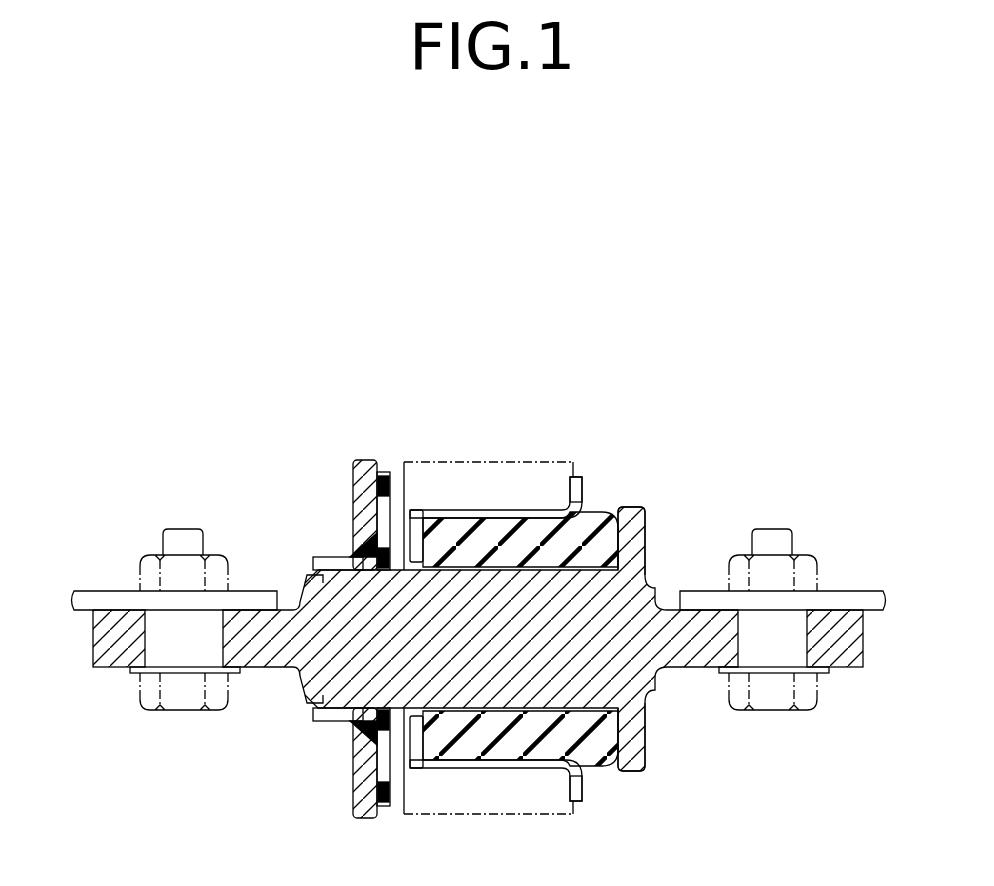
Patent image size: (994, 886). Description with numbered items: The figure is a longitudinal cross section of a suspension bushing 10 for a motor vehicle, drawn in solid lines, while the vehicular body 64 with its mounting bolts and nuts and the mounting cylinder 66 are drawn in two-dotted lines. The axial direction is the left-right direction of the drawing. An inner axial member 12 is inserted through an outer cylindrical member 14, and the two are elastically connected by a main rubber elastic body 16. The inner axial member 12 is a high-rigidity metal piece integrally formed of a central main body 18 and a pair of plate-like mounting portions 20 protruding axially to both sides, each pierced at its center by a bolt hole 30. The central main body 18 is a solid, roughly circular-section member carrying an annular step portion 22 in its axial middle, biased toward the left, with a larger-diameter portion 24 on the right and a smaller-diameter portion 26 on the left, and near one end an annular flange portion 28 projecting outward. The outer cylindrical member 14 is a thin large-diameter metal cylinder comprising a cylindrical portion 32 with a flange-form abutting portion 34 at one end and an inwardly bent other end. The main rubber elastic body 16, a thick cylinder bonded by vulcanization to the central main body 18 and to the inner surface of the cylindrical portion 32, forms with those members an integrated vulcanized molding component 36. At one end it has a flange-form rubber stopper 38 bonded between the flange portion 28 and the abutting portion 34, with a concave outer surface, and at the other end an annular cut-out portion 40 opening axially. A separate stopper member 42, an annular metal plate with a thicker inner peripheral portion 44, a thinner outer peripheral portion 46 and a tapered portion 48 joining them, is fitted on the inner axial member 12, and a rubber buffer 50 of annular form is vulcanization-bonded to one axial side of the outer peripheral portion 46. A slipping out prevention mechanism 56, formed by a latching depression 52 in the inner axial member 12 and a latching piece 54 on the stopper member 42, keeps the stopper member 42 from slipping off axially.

The suspension bushing 10 is at (655, 468).
The inner axial member 12 is at (668, 676).
The outer cylindrical member 14 is at (452, 772).
The main rubber elastic body 16 is at (536, 742).
The central main body 18 is at (505, 619).
The mounting portion 20 is at (119, 648).
The step portion 22 is at (383, 560).
The larger-diameter portion 24 is at (520, 623).
The smaller-diameter portion 26 is at (372, 633).
The flange portion 28 is at (634, 536).
The bolt hole 30 is at (212, 640).
The cylindrical portion 32 is at (545, 510).
The abutting portion 34 is at (576, 492).
The integrated vulcanized molding component 36 is at (607, 776).
The rubber stopper 38 is at (600, 513).
The cut-out portion 40 is at (412, 520).
The stopper member 42 is at (350, 782).
The inner peripheral portion 44 is at (338, 565).
The outer peripheral portion 46 is at (363, 494).
The tapered portion 48 is at (366, 553).
The rubber buffer 50 is at (388, 792).
The latching depression 52 is at (343, 716).
The latching piece 54 is at (313, 578).
The slipping out prevention mechanism 56 is at (330, 697).
The vehicular body 64 is at (104, 598).
The mounting cylinder 66 is at (488, 800).